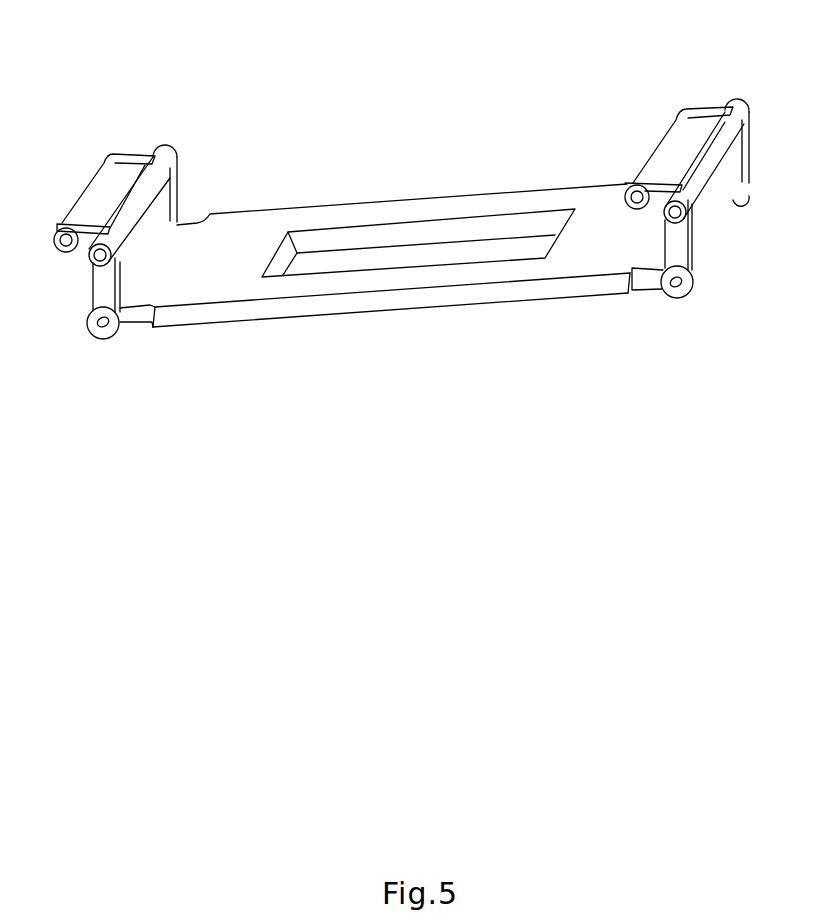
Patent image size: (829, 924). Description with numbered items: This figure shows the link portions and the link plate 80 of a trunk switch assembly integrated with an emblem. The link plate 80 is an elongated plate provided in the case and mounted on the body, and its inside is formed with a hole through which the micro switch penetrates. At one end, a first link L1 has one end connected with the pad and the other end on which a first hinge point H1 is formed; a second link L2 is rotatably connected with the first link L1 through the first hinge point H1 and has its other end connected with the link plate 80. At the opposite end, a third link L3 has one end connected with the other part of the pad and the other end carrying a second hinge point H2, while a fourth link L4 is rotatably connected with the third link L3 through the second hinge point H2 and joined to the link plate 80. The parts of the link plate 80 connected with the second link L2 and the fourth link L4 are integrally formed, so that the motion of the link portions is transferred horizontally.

The link plate 80 is at (260, 220).
The first link L1 is at (103, 193).
The second link L2 is at (102, 287).
The third link L3 is at (678, 147).
The fourth link L4 is at (682, 245).
The first hinge point H1 is at (148, 160).
The second hinge point H2 is at (678, 212).